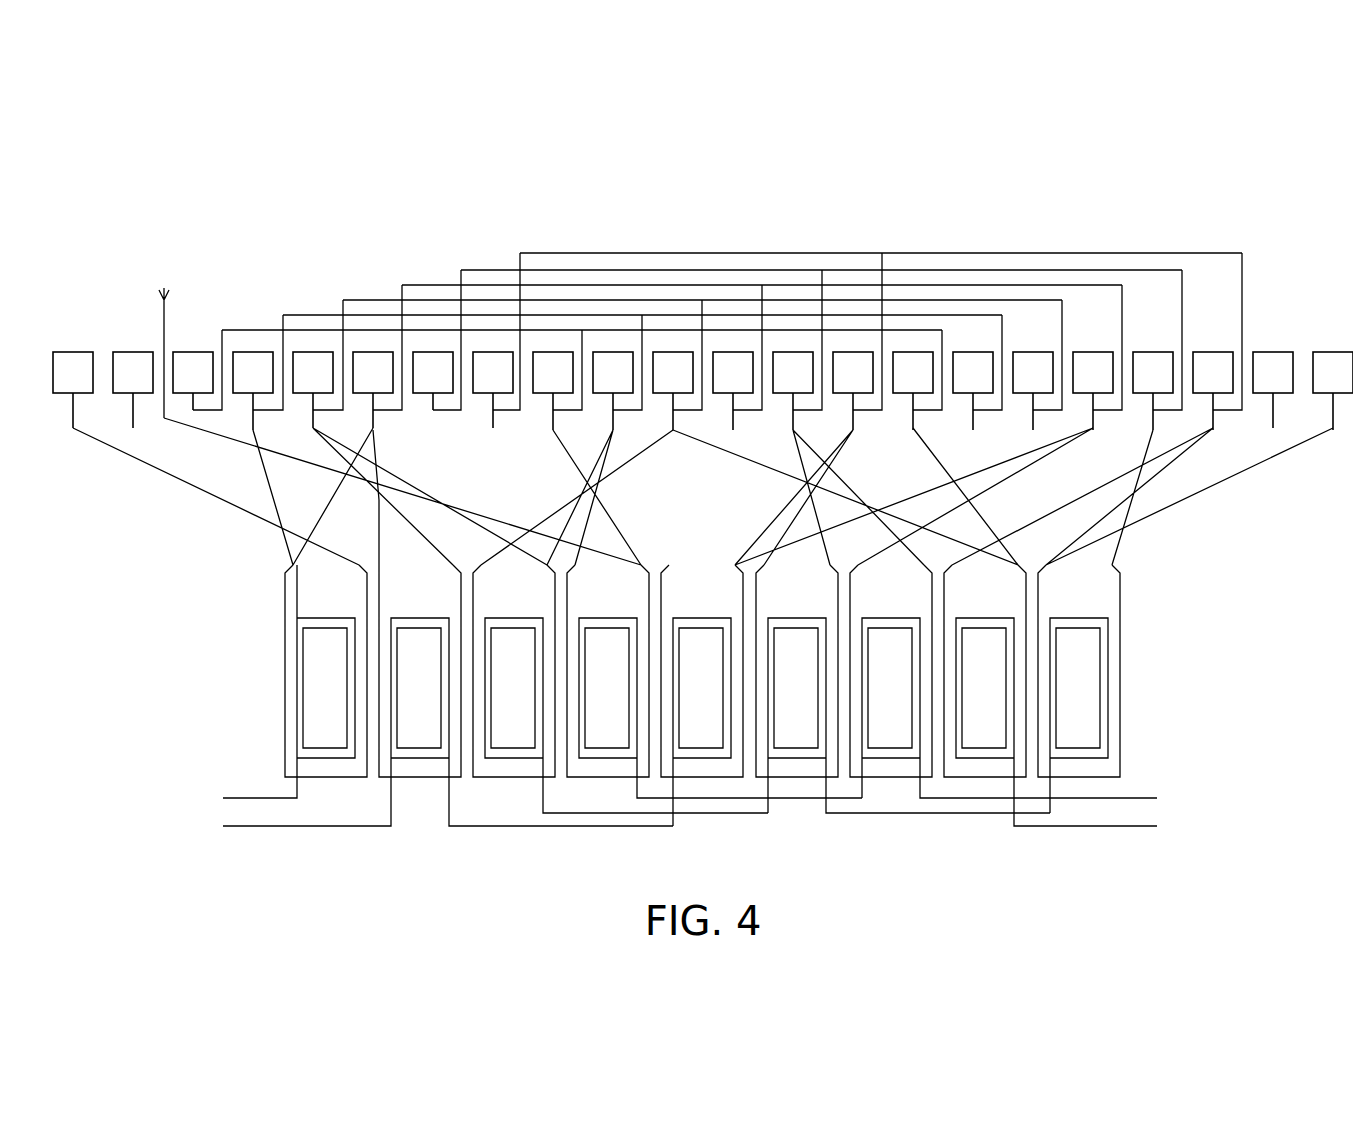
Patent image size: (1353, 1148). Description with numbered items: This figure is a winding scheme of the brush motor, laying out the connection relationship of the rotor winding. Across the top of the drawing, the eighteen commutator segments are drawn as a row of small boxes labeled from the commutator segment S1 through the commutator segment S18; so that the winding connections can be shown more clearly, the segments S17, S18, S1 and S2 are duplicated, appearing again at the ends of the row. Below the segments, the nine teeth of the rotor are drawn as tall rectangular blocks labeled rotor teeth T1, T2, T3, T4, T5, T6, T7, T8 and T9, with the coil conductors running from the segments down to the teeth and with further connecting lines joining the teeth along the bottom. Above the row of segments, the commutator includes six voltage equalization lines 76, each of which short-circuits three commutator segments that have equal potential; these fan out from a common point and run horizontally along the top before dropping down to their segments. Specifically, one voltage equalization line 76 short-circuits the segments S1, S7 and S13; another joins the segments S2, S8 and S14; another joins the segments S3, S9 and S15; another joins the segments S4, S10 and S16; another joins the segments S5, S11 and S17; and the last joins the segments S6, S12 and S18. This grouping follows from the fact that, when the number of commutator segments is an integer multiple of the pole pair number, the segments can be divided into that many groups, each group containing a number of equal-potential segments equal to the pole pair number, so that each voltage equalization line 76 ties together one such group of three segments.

The voltage equalization line 76 is at (520, 253).
The commutator segment S1 is at (733, 390).
The commutator segment S2 is at (793, 391).
The commutator segment S3 is at (313, 390).
The commutator segment S4 is at (373, 390).
The commutator segment S5 is at (433, 381).
The commutator segment S6 is at (493, 390).
The commutator segment S7 is at (553, 391).
The commutator segment S8 is at (613, 391).
The commutator segment S9 is at (673, 391).
The commutator segment S10 is at (733, 391).
The commutator segment S11 is at (793, 391).
The commutator segment S12 is at (853, 391).
The commutator segment S13 is at (913, 391).
The commutator segment S14 is at (973, 391).
The commutator segment S15 is at (1033, 391).
The commutator segment S16 is at (1093, 391).
The commutator segment S17 is at (613, 391).
The commutator segment S18 is at (673, 391).
The rotor tooth T1 is at (714, 681).
The rotor tooth T2 is at (702, 695).
The rotor tooth T3 is at (903, 689).
The rotor tooth T4 is at (1003, 681).
The rotor tooth T5 is at (1050, 695).
The rotor tooth T6 is at (1079, 689).
The rotor tooth T7 is at (295, 681).
The rotor tooth T8 is at (448, 628).
The rotor tooth T9 is at (620, 689).